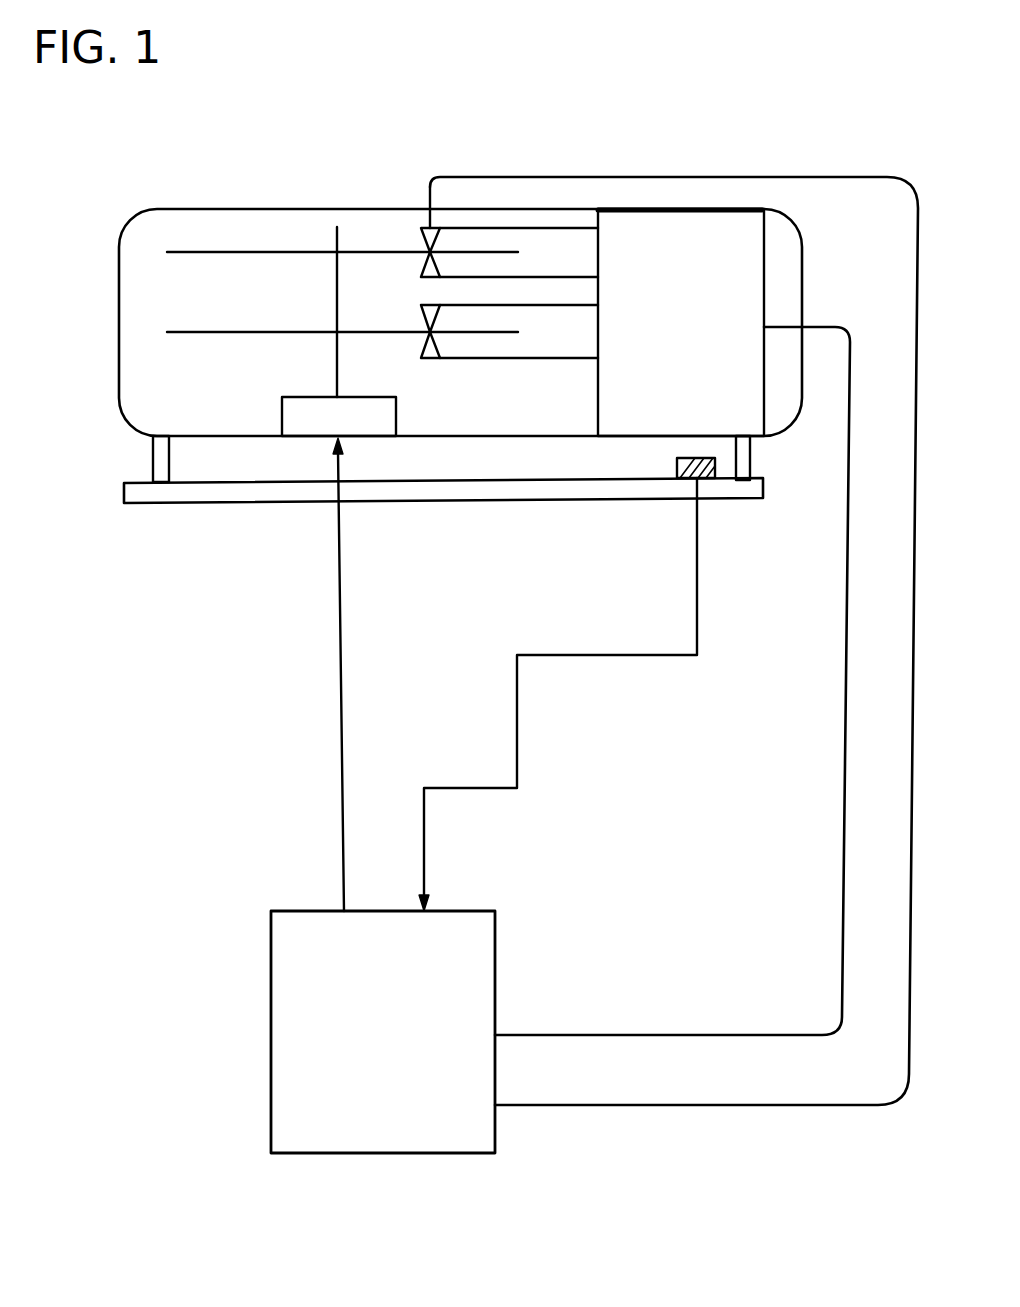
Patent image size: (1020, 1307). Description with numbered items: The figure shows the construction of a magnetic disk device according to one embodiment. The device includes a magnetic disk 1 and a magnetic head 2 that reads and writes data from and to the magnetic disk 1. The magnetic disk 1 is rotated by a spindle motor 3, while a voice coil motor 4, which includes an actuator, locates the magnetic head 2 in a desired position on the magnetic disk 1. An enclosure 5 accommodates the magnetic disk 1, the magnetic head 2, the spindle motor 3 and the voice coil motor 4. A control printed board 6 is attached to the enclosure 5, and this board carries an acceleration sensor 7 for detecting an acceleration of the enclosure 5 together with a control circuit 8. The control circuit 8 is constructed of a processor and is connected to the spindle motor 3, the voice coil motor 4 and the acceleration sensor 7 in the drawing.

The magnetic disk 1 is at (199, 331).
The magnetic head 2 is at (426, 250).
The spindle motor 3 is at (296, 432).
The voice coil motor 4 is at (753, 256).
The enclosure 5 is at (118, 398).
The control printed board 6 is at (178, 506).
The acceleration sensor 7 is at (700, 480).
The control circuit 8 is at (487, 913).